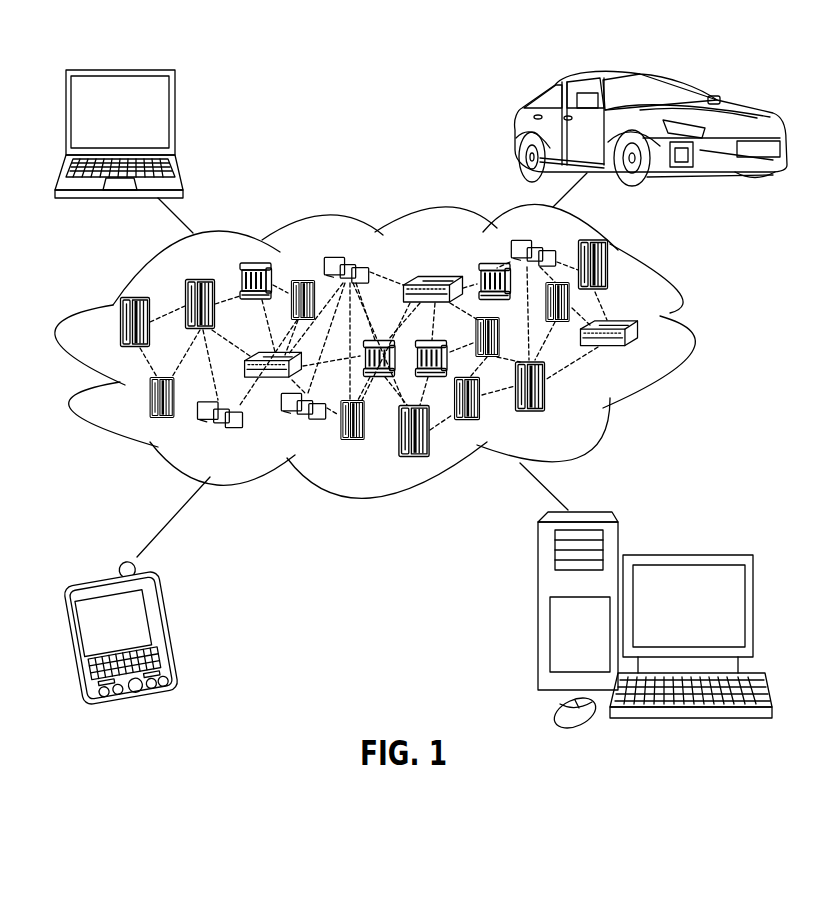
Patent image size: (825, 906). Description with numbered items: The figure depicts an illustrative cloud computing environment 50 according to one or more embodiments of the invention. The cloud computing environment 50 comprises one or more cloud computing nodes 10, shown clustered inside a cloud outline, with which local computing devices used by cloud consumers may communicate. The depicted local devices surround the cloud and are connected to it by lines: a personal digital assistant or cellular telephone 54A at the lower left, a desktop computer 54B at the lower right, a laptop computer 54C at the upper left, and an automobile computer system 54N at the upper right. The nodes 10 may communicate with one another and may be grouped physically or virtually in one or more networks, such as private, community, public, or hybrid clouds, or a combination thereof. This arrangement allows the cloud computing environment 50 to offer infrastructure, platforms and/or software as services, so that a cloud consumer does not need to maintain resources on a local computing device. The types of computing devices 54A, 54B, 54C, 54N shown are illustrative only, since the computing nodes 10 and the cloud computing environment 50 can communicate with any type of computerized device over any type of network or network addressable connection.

The cloud computing nodes 10 is at (421, 348).
The cloud computing environment 50 is at (687, 332).
The personal digital assistant (PDA) or cellular telephone 54A is at (165, 627).
The desktop computer 54B is at (687, 553).
The laptop computer 54C is at (175, 118).
The automobile computer system 54N is at (515, 128).